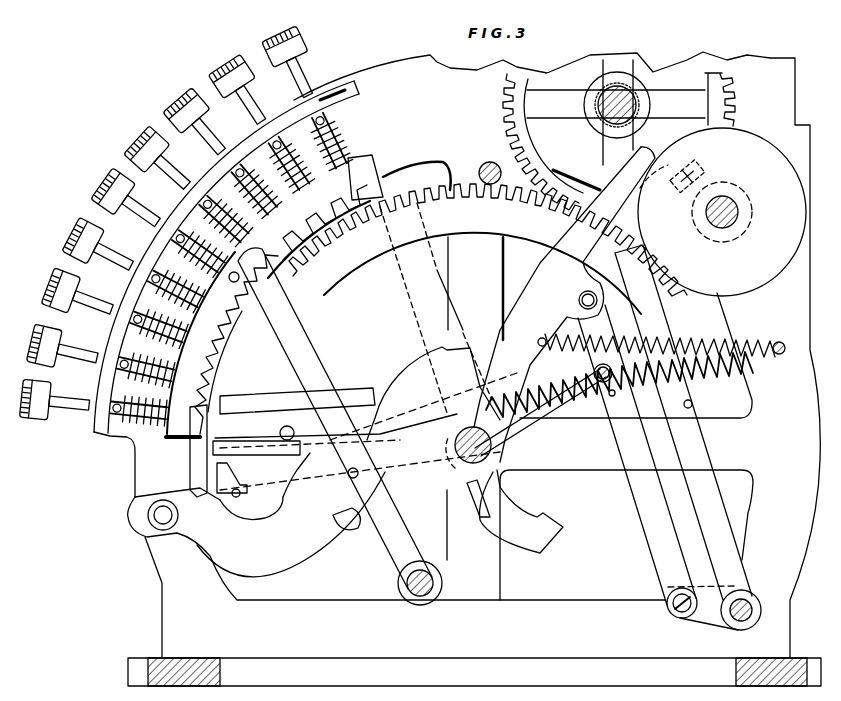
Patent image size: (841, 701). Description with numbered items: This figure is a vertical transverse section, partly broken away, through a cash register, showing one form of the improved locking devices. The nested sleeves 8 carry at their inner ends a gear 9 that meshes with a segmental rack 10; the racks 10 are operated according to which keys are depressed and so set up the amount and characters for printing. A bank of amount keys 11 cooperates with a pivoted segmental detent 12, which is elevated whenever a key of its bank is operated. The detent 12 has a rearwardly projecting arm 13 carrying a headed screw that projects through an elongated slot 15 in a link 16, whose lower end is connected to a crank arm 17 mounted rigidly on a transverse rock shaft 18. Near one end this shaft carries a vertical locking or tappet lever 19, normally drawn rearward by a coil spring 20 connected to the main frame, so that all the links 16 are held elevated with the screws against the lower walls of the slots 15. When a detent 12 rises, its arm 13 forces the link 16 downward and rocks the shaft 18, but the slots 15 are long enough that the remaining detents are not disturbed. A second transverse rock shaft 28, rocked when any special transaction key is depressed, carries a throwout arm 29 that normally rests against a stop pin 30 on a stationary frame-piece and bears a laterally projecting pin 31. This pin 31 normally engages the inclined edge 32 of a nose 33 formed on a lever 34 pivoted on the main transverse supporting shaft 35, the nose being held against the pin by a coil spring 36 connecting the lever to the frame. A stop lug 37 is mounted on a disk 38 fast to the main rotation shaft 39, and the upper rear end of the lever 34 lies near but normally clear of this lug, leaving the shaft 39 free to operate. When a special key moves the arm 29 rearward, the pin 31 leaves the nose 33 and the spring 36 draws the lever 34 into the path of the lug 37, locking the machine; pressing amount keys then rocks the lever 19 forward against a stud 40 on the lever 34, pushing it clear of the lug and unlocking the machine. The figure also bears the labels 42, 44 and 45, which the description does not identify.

The nested sleeves 8 is at (640, 103).
The gear 9 is at (619, 135).
The segmental rack 10 is at (478, 225).
The amount keys 11 is at (152, 150).
The segmental detent 12 is at (388, 183).
The arm 13 is at (548, 420).
The elongated slot 15 is at (564, 304).
The link 16 is at (648, 520).
The crank arm 17 is at (705, 620).
The transverse rock shaft 18 is at (747, 594).
The locking or tappet lever 19 is at (705, 470).
The coil spring 20 is at (748, 393).
The transverse rock shaft 28 is at (421, 596).
The throwout arm 29 is at (304, 357).
The stop pin 30 is at (232, 283).
The pin 31 is at (347, 473).
The inclined edge 32 is at (340, 500).
The nose 33 is at (358, 520).
The lever 34 is at (418, 472).
The main transverse supporting shaft 35 is at (508, 470).
The coil spring 36 is at (686, 340).
The stop lug 37 is at (691, 166).
The disk 38 is at (722, 212).
The main rotation shaft 39 is at (740, 212).
The stud 40 is at (578, 300).
The cam segment 42 is at (405, 345).
The pin 44 is at (612, 396).
The pin 45 is at (593, 372).